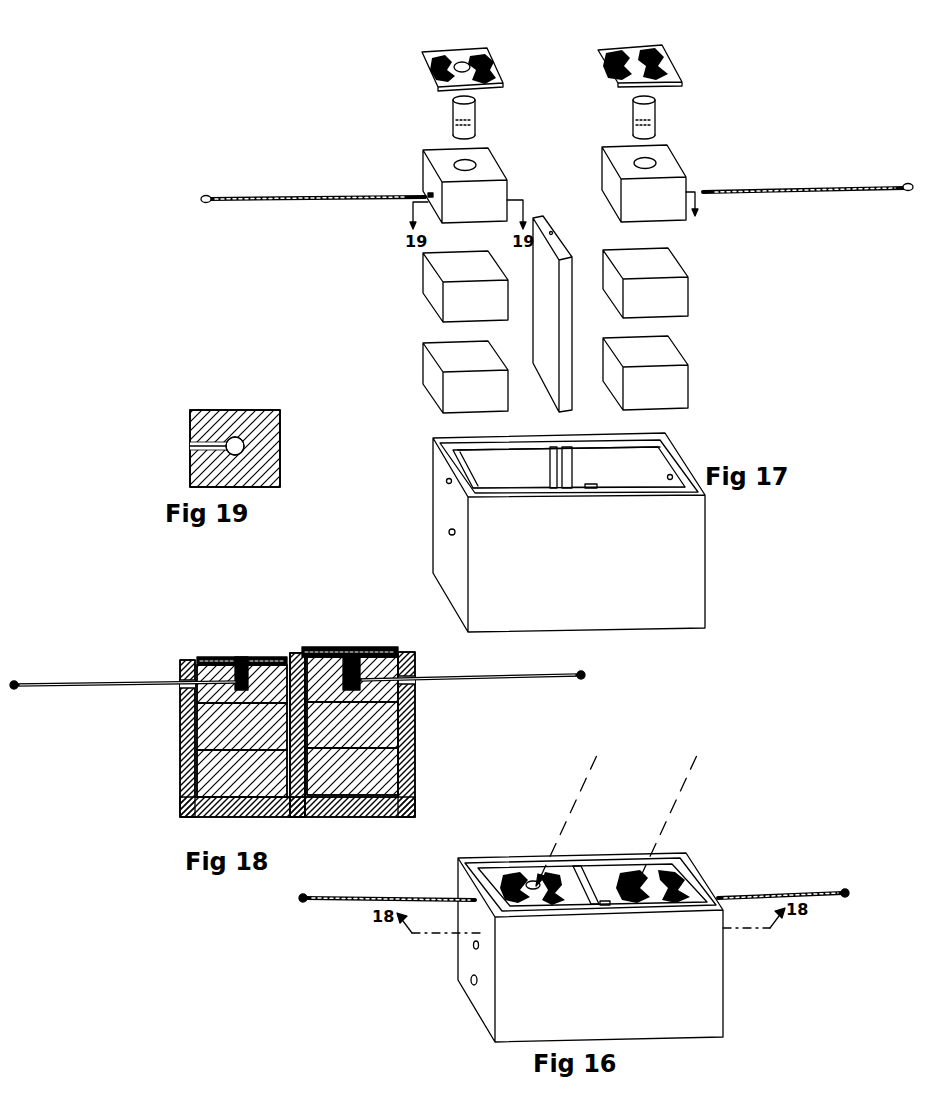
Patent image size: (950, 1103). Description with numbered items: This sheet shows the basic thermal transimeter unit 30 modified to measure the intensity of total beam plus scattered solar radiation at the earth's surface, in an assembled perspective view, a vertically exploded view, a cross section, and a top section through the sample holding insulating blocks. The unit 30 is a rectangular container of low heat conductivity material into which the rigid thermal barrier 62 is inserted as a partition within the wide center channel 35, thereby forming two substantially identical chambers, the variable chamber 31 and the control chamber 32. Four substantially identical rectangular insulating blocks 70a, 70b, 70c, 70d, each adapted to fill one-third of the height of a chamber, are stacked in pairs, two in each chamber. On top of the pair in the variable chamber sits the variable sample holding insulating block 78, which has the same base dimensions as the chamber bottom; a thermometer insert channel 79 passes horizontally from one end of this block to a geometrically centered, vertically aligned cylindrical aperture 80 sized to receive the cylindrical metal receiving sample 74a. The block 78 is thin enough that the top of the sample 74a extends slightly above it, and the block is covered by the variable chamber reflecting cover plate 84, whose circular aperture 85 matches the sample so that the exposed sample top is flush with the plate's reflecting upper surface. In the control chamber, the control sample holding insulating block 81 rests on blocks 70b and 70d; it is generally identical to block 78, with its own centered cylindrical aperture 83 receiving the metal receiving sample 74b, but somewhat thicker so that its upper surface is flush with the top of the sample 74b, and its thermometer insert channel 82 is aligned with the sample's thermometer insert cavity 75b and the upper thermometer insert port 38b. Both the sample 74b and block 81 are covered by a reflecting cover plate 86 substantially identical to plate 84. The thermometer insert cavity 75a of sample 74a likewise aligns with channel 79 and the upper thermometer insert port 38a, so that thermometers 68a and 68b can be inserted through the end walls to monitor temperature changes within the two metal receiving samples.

In FIG. 17, the basic thermal transimeter unit 30 is at (590, 628).
In FIG. 18, the basic thermal transimeter unit 30 is at (277, 818).
In FIG. 17, the variable chamber 31 is at (512, 468).
In FIG. 17, the control chamber 32 is at (615, 468).
In FIG. 17, the center channel 35 is at (580, 487).
In FIG. 17, the upper thermometer insert port 38a is at (446, 481).
In FIG. 18, the upper thermometer insert port 38a is at (238, 682).
In FIG. 18, the upper thermometer insert port 38b is at (406, 680).
In FIG. 17, the rigid thermal barrier 62 is at (548, 335).
In FIG. 18, the rigid thermal barrier 62 is at (298, 806).
In FIG. 17, the thermometer 68a is at (317, 193).
In FIG. 18, the thermometer 68a is at (72, 680).
In FIG. 17, the thermometer 68b is at (772, 184).
In FIG. 18, the thermometer 68b is at (492, 676).
In FIG. 17, the insulating block 70a is at (422, 368).
In FIG. 18, the insulating block 70a is at (235, 768).
In FIG. 17, the insulating block 70b is at (690, 387).
In FIG. 18, the insulating block 70b is at (355, 774).
In FIG. 17, the insulating block 70c is at (422, 278).
In FIG. 18, the insulating block 70c is at (235, 724).
In FIG. 17, the insulating block 70d is at (690, 292).
In FIG. 18, the insulating block 70d is at (350, 724).
In FIG. 17, the metal receiving sample 74a is at (478, 107).
In FIG. 18, the metal receiving sample 74a is at (242, 668).
In FIG. 17, the metal receiving sample 74b is at (632, 110).
In FIG. 18, the metal receiving sample 74b is at (346, 660).
In FIG. 17, the thermometer insert cavity 75a is at (452, 123).
In FIG. 17, the thermometer insert cavity 75b is at (657, 124).
In FIG. 17, the variable sample holding insulating block 78 is at (498, 168).
In FIG. 19, the variable sample holding insulating block 78 is at (267, 450).
In FIG. 18, the variable sample holding insulating block 78 is at (215, 690).
In FIG. 17, the thermometer insert channel 79 is at (428, 194).
In FIG. 19, the thermometer insert channel 79 is at (190, 447).
In FIG. 17, the cylindrical aperture 80 is at (455, 164).
In FIG. 19, the cylindrical aperture 80 is at (255, 412).
In FIG. 17, the control sample holding insulating block 81 is at (602, 183).
In FIG. 19, the control sample holding insulating block 81 is at (260, 447).
In FIG. 18, the control sample holding insulating block 81 is at (370, 686).
In FIG. 17, the thermometer insert channel 82 is at (698, 216).
In FIG. 19, the thermometer insert channel 82 is at (168, 447).
In FIG. 17, the plug hole 83 is at (650, 162).
In FIG. 19, the plug hole 83 is at (238, 437).
In FIG. 17, the variable chamber reflecting cover plate 84 is at (422, 70).
In FIG. 18, the variable chamber reflecting cover plate 84 is at (213, 657).
In FIG. 17, the circular aperture 85 is at (455, 62).
In FIG. 18, the circular aperture 85 is at (238, 663).
In FIG. 17, the reflecting cover plate 86 is at (683, 63).
In FIG. 18, the reflecting cover plate 86 is at (361, 655).